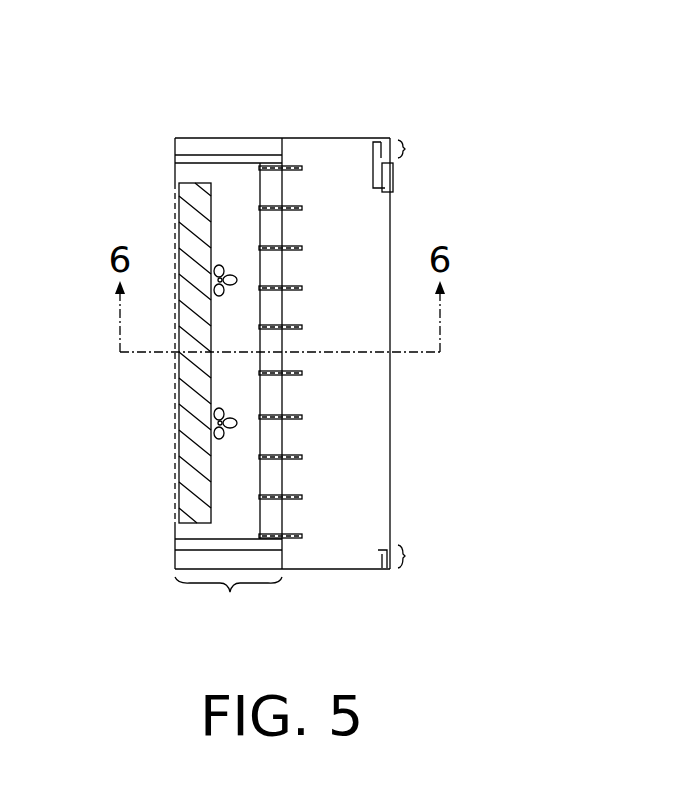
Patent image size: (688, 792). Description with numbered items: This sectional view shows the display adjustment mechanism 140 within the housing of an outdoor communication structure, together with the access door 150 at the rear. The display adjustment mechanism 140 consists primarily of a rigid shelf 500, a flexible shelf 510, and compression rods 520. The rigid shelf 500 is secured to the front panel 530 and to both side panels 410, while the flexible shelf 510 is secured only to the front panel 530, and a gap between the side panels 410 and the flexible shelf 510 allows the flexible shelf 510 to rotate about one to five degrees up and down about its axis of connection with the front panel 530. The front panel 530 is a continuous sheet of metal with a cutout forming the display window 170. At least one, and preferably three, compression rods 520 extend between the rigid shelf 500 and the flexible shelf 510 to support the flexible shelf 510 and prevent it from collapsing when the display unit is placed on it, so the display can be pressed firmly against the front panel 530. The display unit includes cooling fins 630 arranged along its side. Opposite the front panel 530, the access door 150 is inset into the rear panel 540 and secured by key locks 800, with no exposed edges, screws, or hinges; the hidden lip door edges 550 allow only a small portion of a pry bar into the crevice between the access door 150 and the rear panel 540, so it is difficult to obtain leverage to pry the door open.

The display adjustment mechanism 140 is at (222, 607).
The access door 150 is at (390, 217).
The display window 170 is at (173, 382).
The side panels 410 is at (156, 138).
The rigid shelf 500 is at (283, 150).
The flexible shelf 510 is at (207, 155).
The compression rods 520 is at (270, 197).
The front panel 530 is at (175, 118).
The rear panel 540 is at (390, 122).
The hidden lip door edges 550 is at (421, 145).
The cooling fins 630 is at (302, 454).
The key locks 800 is at (395, 178).